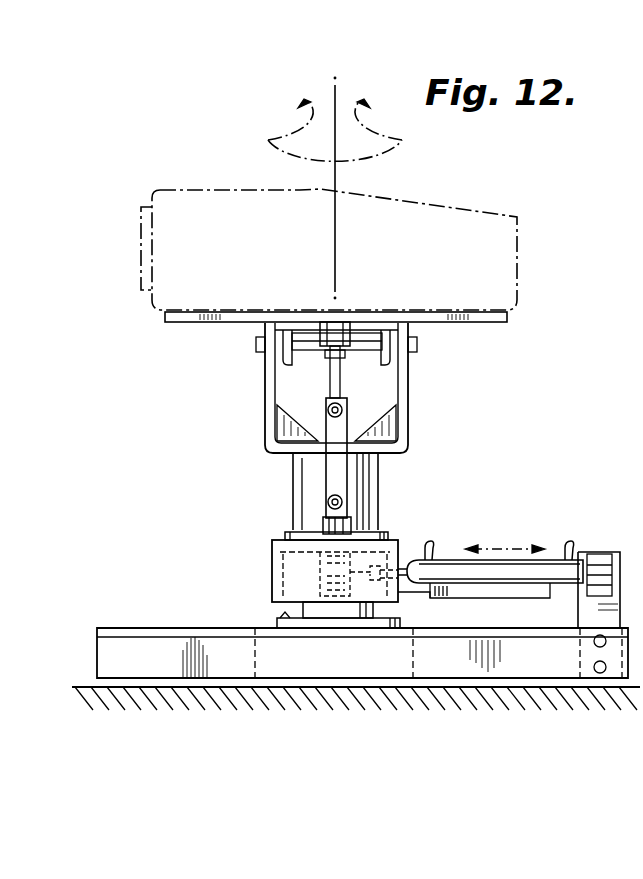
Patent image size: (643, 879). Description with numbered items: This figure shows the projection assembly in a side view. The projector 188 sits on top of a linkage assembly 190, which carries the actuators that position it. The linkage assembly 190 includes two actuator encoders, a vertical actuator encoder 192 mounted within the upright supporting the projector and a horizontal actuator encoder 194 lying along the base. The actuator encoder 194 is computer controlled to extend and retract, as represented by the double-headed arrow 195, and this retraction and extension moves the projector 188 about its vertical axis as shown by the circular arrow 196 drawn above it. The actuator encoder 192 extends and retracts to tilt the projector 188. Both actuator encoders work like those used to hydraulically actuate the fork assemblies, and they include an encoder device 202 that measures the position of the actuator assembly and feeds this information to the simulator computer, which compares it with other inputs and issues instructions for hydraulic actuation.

The projector 188 is at (403, 216).
The linkage assembly 190 is at (283, 515).
The actuator encoder 192 is at (327, 417).
The actuator encoder 194 is at (528, 572).
The arrow 195 is at (505, 548).
The circular arrow 196 is at (268, 140).
The encoder device 202 is at (466, 590).